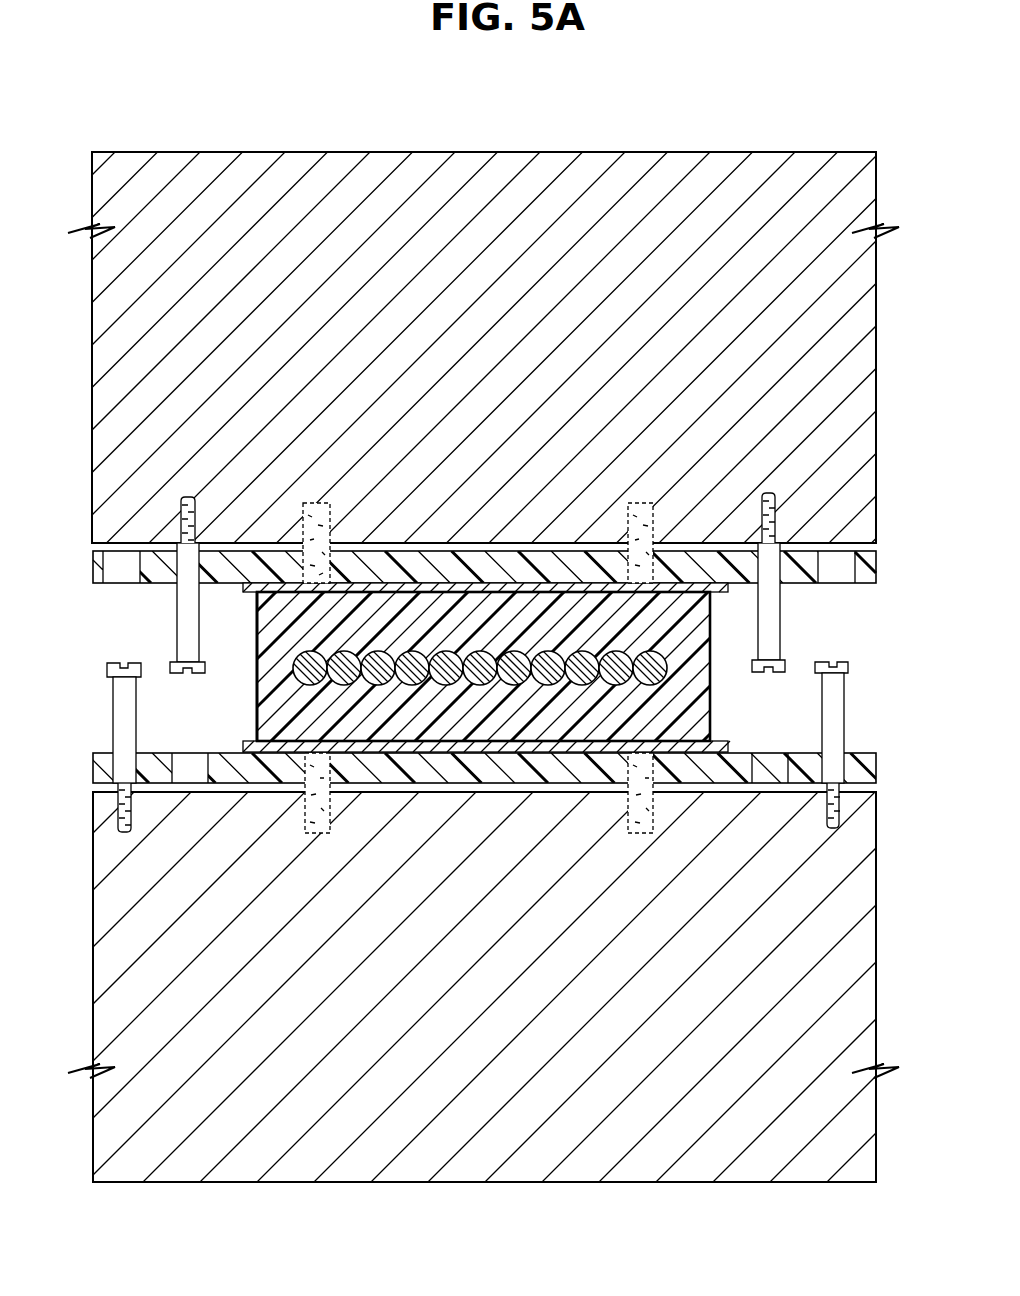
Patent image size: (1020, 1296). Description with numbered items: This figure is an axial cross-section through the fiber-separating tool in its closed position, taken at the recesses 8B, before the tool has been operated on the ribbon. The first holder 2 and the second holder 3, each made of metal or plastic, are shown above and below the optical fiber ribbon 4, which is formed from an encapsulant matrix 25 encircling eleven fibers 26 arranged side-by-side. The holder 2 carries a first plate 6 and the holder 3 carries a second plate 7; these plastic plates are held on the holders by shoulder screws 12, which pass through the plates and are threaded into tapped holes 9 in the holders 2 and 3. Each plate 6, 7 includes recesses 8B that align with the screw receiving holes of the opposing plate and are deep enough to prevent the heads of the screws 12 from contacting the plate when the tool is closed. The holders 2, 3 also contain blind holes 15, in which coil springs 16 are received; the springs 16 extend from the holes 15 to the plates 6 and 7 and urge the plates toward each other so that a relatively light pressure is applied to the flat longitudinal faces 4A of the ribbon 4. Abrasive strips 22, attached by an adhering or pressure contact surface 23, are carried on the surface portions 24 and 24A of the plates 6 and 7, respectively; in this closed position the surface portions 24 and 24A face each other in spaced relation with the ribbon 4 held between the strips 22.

The first holder 2 is at (878, 186).
The second holder 3 is at (877, 947).
The optical fiber ribbon 4 is at (710, 637).
The flat longitudinal faces 4A is at (257, 733).
The first plate 6 is at (877, 567).
The second plate 7 is at (877, 773).
The recesses 8B is at (128, 567).
The tapped holes 9 is at (198, 500).
The shoulder screws 12 is at (770, 630).
The blind holes 15 is at (655, 513).
The coil springs 16 is at (307, 512).
The abrasive strips 22 is at (243, 588).
The adhering or pressure contact surface 23 is at (167, 585).
The surface portion 24 is at (857, 580).
The surface portion 24A is at (872, 748).
The encapsulant matrix 25 is at (504, 728).
The fibers 26 is at (624, 650).